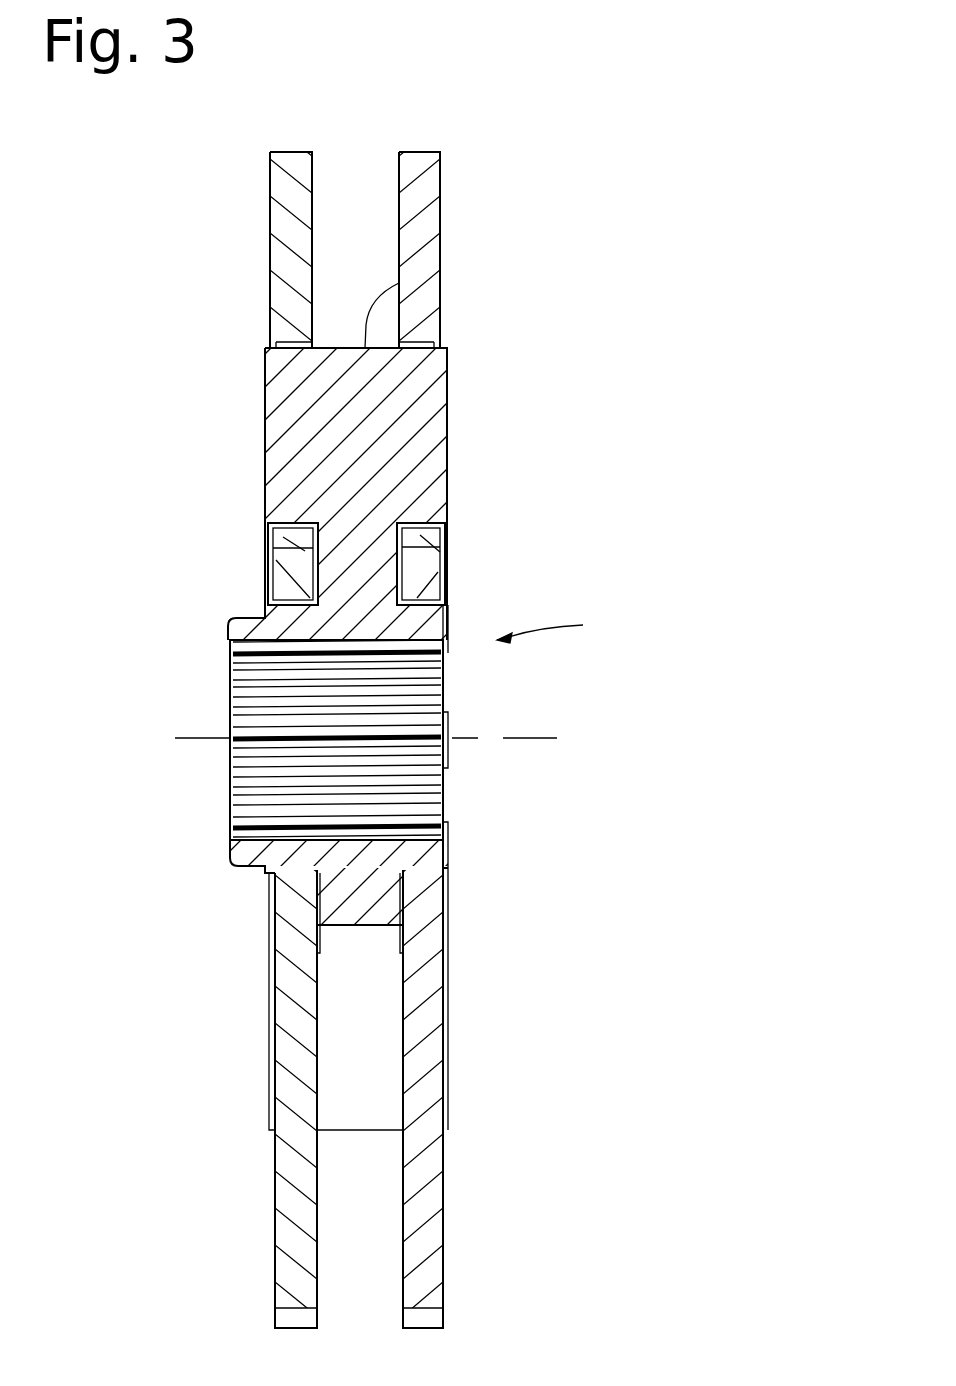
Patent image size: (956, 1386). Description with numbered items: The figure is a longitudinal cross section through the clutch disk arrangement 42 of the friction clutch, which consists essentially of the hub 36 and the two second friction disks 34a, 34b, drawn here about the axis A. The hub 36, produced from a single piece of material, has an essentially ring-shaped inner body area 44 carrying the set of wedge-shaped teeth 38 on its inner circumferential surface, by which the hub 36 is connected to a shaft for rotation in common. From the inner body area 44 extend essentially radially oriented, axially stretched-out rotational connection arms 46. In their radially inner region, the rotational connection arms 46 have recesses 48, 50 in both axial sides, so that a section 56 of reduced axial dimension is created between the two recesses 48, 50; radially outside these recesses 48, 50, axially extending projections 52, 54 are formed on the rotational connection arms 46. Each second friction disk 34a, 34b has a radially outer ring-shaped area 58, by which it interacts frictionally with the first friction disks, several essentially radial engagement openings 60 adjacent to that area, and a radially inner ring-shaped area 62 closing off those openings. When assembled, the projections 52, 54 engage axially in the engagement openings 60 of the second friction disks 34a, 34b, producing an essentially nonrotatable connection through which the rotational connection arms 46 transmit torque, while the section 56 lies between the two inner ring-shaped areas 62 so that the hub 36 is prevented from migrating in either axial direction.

The second friction disk 34a is at (440, 215).
The second friction disk 34b is at (270, 240).
The hub 36 is at (385, 422).
The set of wedge-shaped teeth 38 is at (230, 822).
The clutch disk arrangement 42 is at (569, 626).
The inner body area 44 is at (448, 850).
The rotational connection arms 46 is at (399, 283).
The recess 48 is at (277, 537).
The recess 50 is at (445, 508).
The projection 52 is at (282, 400).
The projection 54 is at (417, 372).
The section of reduced axial dimension 56 is at (275, 627).
The radially outer ring-shaped area 58 is at (420, 165).
The engagement openings 60 is at (288, 537).
The ring-shaped area 62 is at (443, 620).
The axis A is at (540, 738).